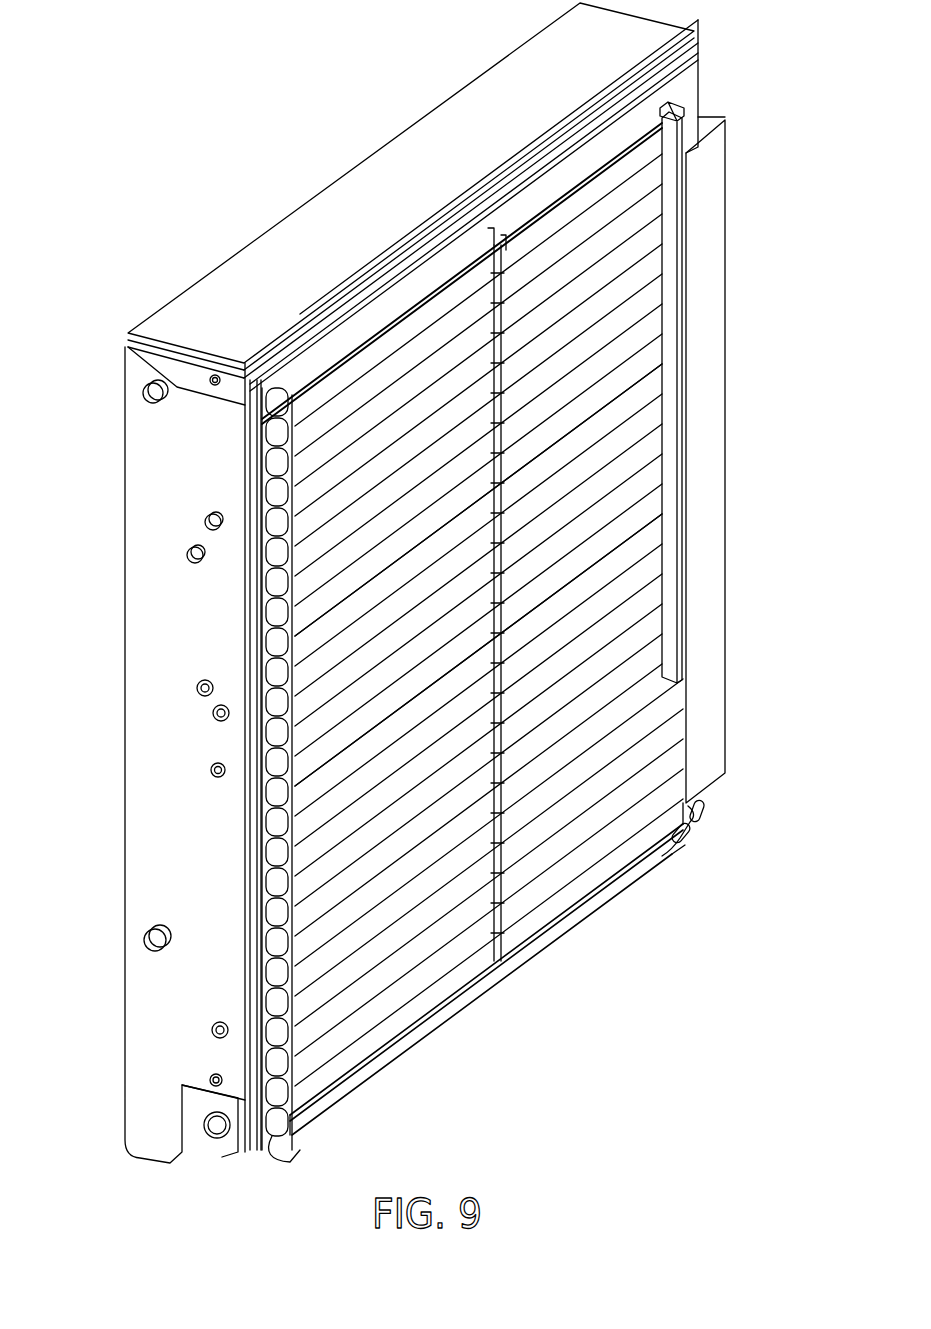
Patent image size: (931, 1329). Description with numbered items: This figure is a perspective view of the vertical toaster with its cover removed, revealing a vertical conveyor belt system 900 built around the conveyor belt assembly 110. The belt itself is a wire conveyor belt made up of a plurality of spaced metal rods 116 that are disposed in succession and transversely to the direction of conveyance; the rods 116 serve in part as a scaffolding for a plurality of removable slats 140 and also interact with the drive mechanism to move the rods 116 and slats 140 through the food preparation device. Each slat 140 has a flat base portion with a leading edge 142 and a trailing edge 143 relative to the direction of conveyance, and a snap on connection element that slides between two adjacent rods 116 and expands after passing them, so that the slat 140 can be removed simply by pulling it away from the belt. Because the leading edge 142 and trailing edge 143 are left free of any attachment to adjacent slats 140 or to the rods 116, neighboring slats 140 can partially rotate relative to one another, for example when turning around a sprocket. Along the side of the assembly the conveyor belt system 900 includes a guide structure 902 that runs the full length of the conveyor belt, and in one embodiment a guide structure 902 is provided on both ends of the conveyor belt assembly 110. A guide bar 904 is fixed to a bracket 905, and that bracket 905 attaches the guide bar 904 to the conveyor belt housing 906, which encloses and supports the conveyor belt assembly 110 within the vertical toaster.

The vertical conveyor belt system 900 is at (248, 122).
The conveyor belt assembly 110 is at (556, 970).
The rods 116 is at (468, 290).
The slat 140 is at (645, 372).
The leading edge 142 is at (622, 540).
The trailing edge 143 is at (578, 548).
The guide structure 902 is at (708, 280).
The guide bar 904 is at (680, 106).
The bracket 905 is at (702, 122).
The conveyor belt housing 906 is at (148, 652).